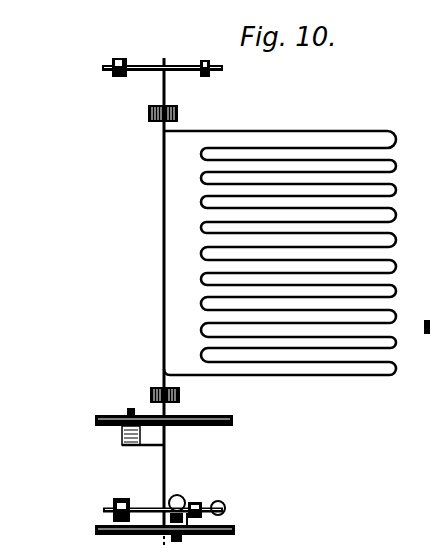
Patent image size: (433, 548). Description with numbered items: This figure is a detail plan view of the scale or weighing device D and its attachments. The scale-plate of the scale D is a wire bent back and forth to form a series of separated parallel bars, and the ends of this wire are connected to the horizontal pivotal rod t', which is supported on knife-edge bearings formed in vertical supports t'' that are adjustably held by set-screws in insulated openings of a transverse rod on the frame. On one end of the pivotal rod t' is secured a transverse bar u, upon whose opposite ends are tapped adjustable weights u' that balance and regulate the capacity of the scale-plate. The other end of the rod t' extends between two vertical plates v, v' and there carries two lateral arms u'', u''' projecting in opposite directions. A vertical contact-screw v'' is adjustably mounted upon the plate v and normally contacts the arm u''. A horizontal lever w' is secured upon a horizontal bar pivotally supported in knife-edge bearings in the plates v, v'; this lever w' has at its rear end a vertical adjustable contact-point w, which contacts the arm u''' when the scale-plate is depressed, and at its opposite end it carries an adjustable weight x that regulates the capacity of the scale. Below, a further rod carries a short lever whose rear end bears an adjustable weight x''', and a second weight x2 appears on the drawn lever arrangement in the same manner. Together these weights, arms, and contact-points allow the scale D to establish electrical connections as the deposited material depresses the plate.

The scale D is at (280, 241).
The pivotal rod t' is at (147, 302).
The vertical supports t'' is at (144, 254).
The transverse bar u is at (162, 51).
The adjustable weights u' is at (161, 54).
The lateral arm u'' is at (143, 458).
The lateral arm u''' is at (200, 503).
The adjustable weight x is at (160, 29).
The pin (lower) x2 is at (121, 499).
The adjustable weight x''' is at (198, 499).
The vertical plate v is at (179, 419).
The vertical plate v' is at (180, 527).
The contact-screw v'' is at (120, 440).
The contact-point w is at (228, 503).
The horizontal lever w' is at (163, 497).